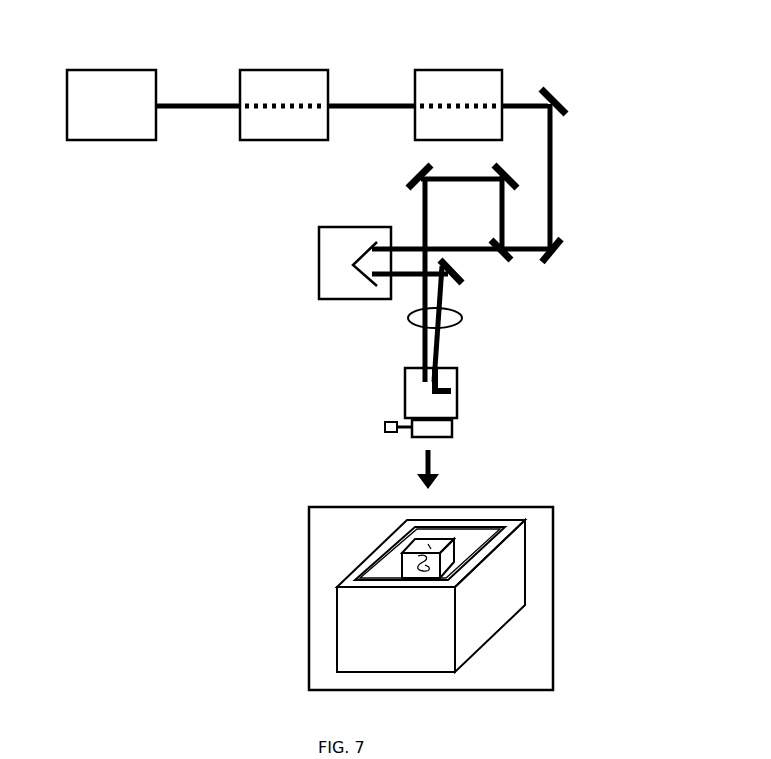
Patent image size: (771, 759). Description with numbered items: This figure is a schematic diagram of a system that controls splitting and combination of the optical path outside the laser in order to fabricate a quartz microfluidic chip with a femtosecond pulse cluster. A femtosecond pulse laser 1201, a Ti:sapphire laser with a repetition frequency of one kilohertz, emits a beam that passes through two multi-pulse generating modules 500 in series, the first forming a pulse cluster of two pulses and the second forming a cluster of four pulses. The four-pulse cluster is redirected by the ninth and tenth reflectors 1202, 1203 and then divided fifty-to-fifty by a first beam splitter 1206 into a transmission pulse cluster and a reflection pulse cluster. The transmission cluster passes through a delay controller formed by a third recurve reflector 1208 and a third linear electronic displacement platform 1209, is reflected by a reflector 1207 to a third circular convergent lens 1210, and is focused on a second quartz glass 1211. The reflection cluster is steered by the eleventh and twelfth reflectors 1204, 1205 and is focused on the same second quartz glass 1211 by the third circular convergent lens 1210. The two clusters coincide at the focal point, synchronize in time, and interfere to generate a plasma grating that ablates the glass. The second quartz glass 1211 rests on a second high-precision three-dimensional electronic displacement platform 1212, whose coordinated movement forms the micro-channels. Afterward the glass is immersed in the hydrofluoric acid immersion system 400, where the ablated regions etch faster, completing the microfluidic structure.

The femtosecond pulse laser 1201 is at (113, 68).
The multi-pulse generating module 500 is at (445, 78).
The ninth reflector 1202 is at (548, 88).
The tenth reflector 1203 is at (557, 257).
The eleventh reflector 1204 is at (517, 182).
The twelfth reflector 1205 is at (410, 176).
The first beam splitter 1206 is at (513, 261).
The eleventh reflector 1207 is at (463, 281).
The third recurve reflector 1208 is at (360, 257).
The third linear electronic displacement platform 1209 is at (330, 275).
The third circular convergent lens 1210 is at (408, 318).
The second quartz glass 1211 is at (413, 381).
The second high-precision three-dimensional electronic displacement platform 1212 is at (425, 429).
The hydrofluoric acid immersion system 400 is at (343, 538).